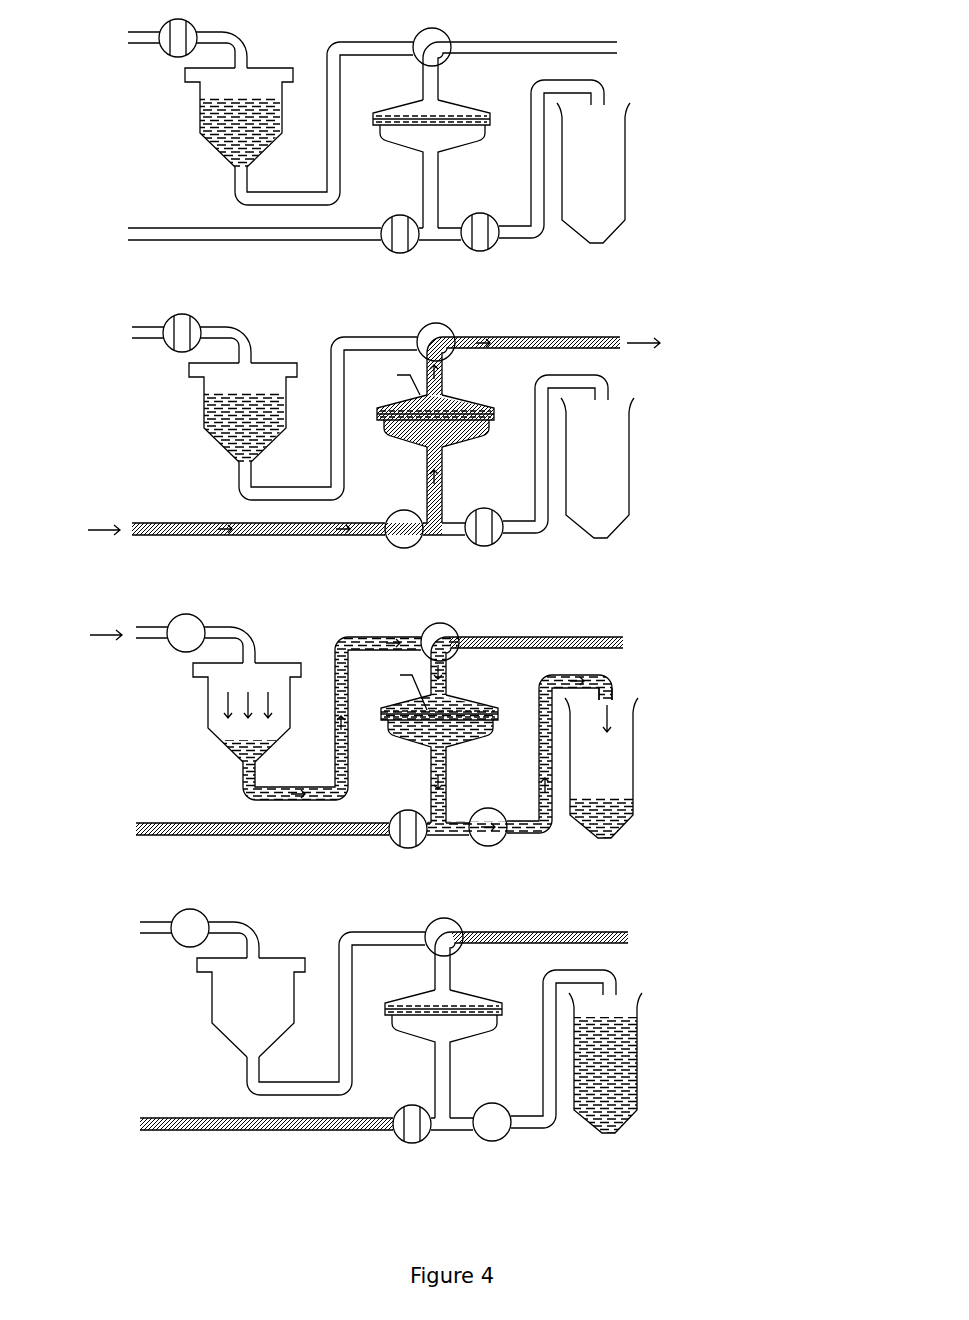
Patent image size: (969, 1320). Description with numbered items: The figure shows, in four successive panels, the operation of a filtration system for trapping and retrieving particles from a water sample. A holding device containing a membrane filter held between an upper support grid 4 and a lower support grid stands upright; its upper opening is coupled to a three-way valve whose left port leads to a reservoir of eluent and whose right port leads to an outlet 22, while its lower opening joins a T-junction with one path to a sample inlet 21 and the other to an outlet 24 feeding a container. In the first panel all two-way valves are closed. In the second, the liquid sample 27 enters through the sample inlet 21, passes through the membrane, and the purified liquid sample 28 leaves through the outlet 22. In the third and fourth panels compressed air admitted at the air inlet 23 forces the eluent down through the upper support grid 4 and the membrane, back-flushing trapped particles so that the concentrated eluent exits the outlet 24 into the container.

The upper support grid 4 is at (418, 116).
The sample inlet 21 is at (103, 508).
The outlet 22 is at (643, 327).
The air inlet 23 is at (104, 618).
The outlet 24 is at (635, 686).
The liquid sample 27 is at (258, 488).
The purified liquid sample 28 is at (531, 327).